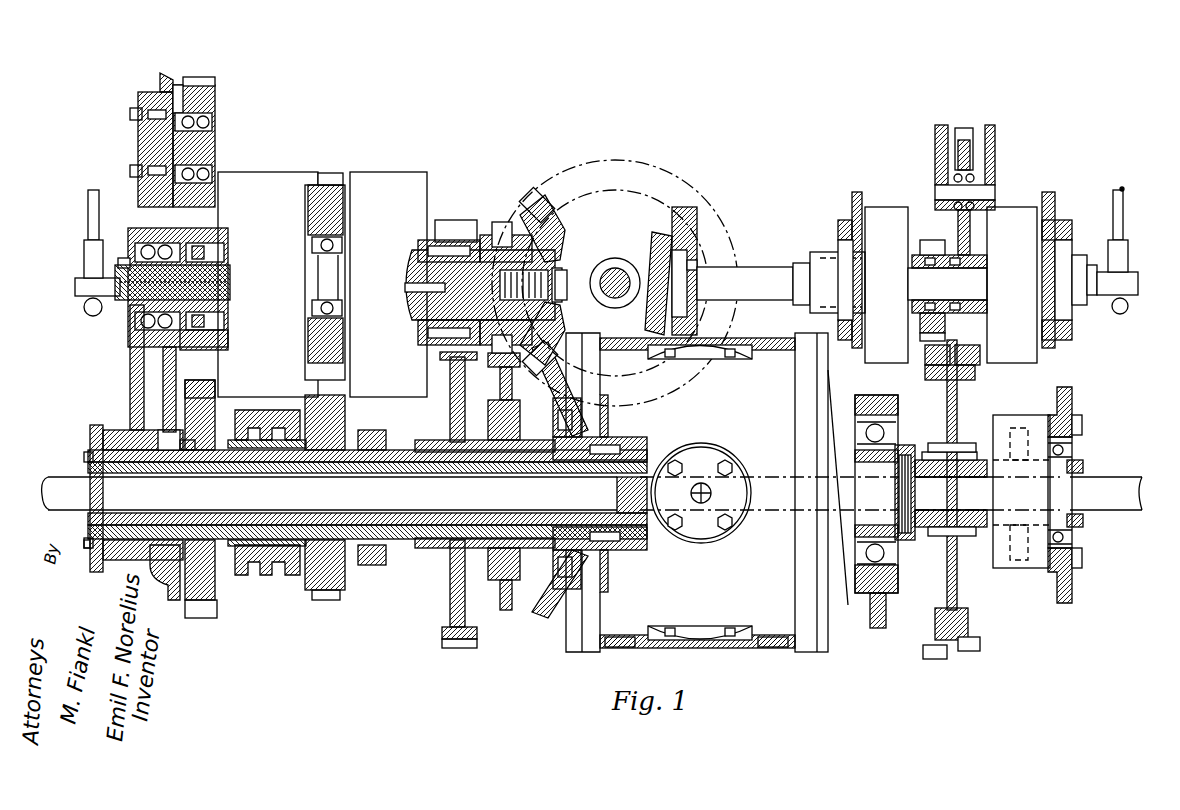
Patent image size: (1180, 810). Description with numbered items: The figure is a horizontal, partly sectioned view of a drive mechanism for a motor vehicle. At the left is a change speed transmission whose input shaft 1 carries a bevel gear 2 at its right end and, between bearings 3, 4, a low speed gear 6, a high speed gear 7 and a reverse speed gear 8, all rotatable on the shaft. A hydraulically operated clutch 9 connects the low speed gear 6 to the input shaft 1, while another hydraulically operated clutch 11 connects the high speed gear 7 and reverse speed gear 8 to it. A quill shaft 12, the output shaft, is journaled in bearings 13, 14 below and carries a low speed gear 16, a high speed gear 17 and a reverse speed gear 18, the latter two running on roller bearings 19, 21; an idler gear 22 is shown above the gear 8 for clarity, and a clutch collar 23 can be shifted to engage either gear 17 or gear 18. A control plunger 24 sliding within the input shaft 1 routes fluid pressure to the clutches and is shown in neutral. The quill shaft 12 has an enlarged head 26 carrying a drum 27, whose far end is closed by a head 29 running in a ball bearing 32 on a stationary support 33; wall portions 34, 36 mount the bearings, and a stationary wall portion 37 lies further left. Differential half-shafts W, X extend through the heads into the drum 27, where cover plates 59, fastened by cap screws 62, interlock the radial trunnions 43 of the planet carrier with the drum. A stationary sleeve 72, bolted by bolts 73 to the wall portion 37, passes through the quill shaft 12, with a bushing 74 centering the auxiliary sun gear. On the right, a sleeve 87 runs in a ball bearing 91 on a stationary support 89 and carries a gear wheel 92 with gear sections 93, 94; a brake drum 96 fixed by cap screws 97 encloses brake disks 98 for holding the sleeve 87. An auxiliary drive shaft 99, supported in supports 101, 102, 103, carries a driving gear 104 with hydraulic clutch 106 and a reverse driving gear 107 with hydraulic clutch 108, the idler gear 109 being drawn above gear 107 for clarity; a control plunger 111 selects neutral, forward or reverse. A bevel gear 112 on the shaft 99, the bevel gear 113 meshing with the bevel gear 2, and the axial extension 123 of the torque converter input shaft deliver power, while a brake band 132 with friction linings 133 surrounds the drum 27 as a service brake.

The differential half-shaft W is at (66, 475).
The differential half-shaft X is at (1128, 478).
The input shaft 1 is at (556, 272).
The bevel gear 2 is at (545, 208).
The bearing 3 is at (490, 232).
The bearing 4 is at (135, 250).
The low speed gear 6 is at (456, 228).
The high speed gear 7 is at (332, 185).
The reverse speed gear 8 is at (228, 344).
The hydraulically operated clutch 9 is at (389, 172).
The hydraulically operated clutch 11 is at (272, 172).
The quill shaft 12 is at (112, 540).
The bearing 13 is at (520, 565).
The bearing 14 is at (158, 440).
The low speed gear 16 is at (455, 648).
The high speed gear 17 is at (330, 600).
The reverse speed gear 18 is at (205, 612).
The roller bearing 19 is at (378, 558).
The roller bearing 21 is at (215, 583).
The idler gear 22 is at (208, 95).
The clutch collar 23 is at (268, 575).
The control plunger 24 is at (75, 287).
The enlarged head 26 is at (565, 590).
The drum 27 is at (735, 348).
The head 29 is at (840, 595).
The ball bearing 32 is at (884, 433).
The stationary support 33 is at (886, 610).
The wall portion 34 is at (506, 610).
The wall portion 36 is at (165, 590).
The stationary wall portion 37 is at (90, 550).
The radial trunnion 43 is at (711, 494).
The annular cover plate 59 is at (718, 452).
The cap screw 62 is at (730, 525).
The sleeve 72 is at (375, 473).
The bolt 73 is at (84, 540).
The bushing 74 is at (568, 473).
The sleeve 87 is at (1082, 462).
The stationary support 89 is at (1072, 594).
The ball bearing 91 is at (1072, 538).
The gear wheel 92 is at (957, 585).
The gear section 93 is at (936, 659).
The gear section 94 is at (970, 650).
The brake drum 96 is at (1020, 568).
The cap screw 97 is at (1082, 420).
The brake disk 98 is at (1020, 428).
The auxiliary drive shaft 99 is at (762, 268).
The support 101 is at (684, 217).
The support 102 is at (852, 196).
The support 103 is at (1058, 205).
The driving gear 104 is at (930, 240).
The hydraulic clutch 106 is at (888, 207).
The reverse driving gear 107 is at (966, 268).
The hydraulic clutch 108 is at (1015, 207).
The idler gear 109 is at (966, 125).
The control plunger 111 is at (1138, 283).
The bevel gear 112 is at (652, 240).
The bevel gear 113 is at (690, 196).
The axial extension 123 is at (612, 300).
The brake band 132 is at (668, 648).
The friction lining 133 is at (618, 648).